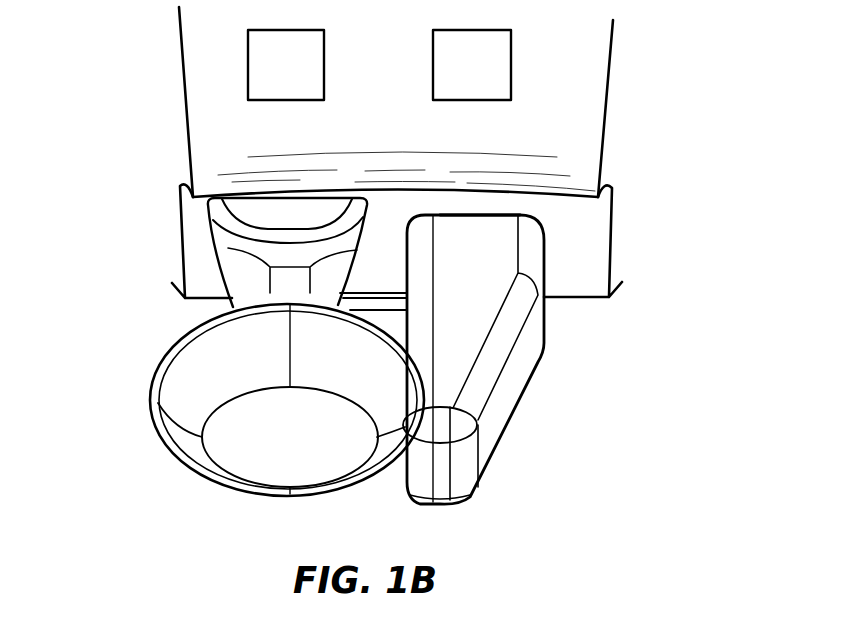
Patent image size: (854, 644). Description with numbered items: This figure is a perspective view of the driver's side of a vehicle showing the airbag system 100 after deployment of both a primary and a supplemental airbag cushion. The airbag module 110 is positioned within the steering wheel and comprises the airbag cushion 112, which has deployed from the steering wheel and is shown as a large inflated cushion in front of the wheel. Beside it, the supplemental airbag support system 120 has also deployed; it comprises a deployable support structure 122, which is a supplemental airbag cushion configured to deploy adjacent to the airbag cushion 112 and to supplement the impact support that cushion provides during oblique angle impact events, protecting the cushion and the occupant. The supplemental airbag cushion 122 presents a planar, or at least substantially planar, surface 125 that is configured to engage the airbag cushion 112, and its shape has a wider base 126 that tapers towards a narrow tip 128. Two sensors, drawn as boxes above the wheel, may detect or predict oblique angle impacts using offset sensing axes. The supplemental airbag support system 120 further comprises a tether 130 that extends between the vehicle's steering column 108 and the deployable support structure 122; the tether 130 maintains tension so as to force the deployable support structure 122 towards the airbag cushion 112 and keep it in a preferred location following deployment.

The airbag system 100 is at (557, 475).
The steering column 108 is at (238, 270).
The airbag module 110 is at (172, 458).
The airbag cushion 112 is at (250, 452).
The supplemental airbag support system 120 is at (560, 333).
The deployable support structure 122 is at (470, 327).
The planar surface 125 is at (398, 387).
The wider base 126 is at (498, 212).
The narrow tip 128 is at (443, 505).
The tether 130 is at (372, 303).